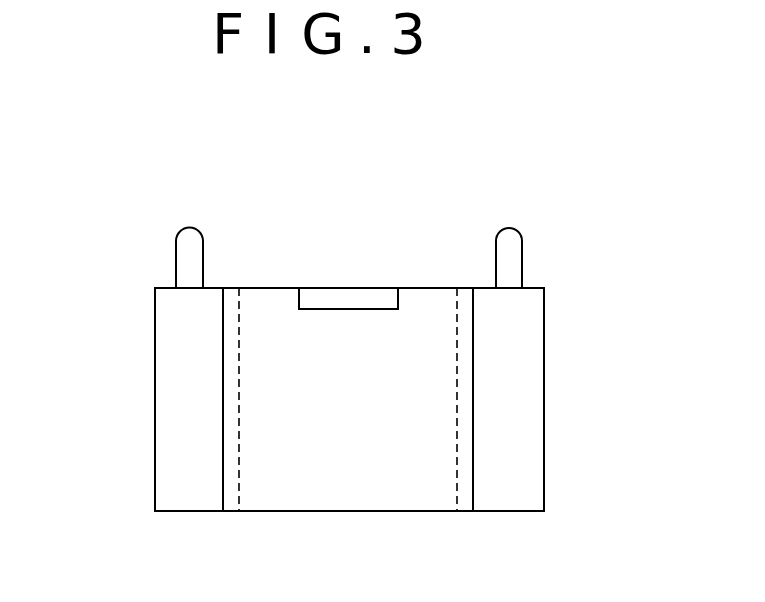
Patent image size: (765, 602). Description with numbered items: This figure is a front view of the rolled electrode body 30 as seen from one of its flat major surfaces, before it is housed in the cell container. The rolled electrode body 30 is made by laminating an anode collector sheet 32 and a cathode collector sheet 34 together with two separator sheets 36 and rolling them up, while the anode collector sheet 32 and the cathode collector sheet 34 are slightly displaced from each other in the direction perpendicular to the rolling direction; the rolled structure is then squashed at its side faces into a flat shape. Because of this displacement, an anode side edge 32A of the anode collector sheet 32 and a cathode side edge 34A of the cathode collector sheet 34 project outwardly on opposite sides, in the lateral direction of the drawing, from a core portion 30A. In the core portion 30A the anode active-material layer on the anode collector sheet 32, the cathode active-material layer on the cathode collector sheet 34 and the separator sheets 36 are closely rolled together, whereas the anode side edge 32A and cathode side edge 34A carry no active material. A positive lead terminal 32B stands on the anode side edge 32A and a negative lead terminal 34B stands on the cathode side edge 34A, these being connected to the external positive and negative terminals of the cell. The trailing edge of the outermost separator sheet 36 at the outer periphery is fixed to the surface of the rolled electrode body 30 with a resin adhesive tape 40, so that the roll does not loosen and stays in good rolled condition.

The rolled electrode body 30 is at (434, 272).
The core portion 30A is at (345, 493).
The anode collector sheet 32 is at (548, 356).
The anode side edge 32A is at (518, 462).
The positive lead terminal 32B is at (523, 250).
The cathode collector sheet 34 is at (151, 355).
The cathode side edge 34A is at (163, 447).
The negative lead terminal 34B is at (203, 247).
The separator sheet 36 is at (280, 300).
The adhesive tape 40 is at (349, 300).